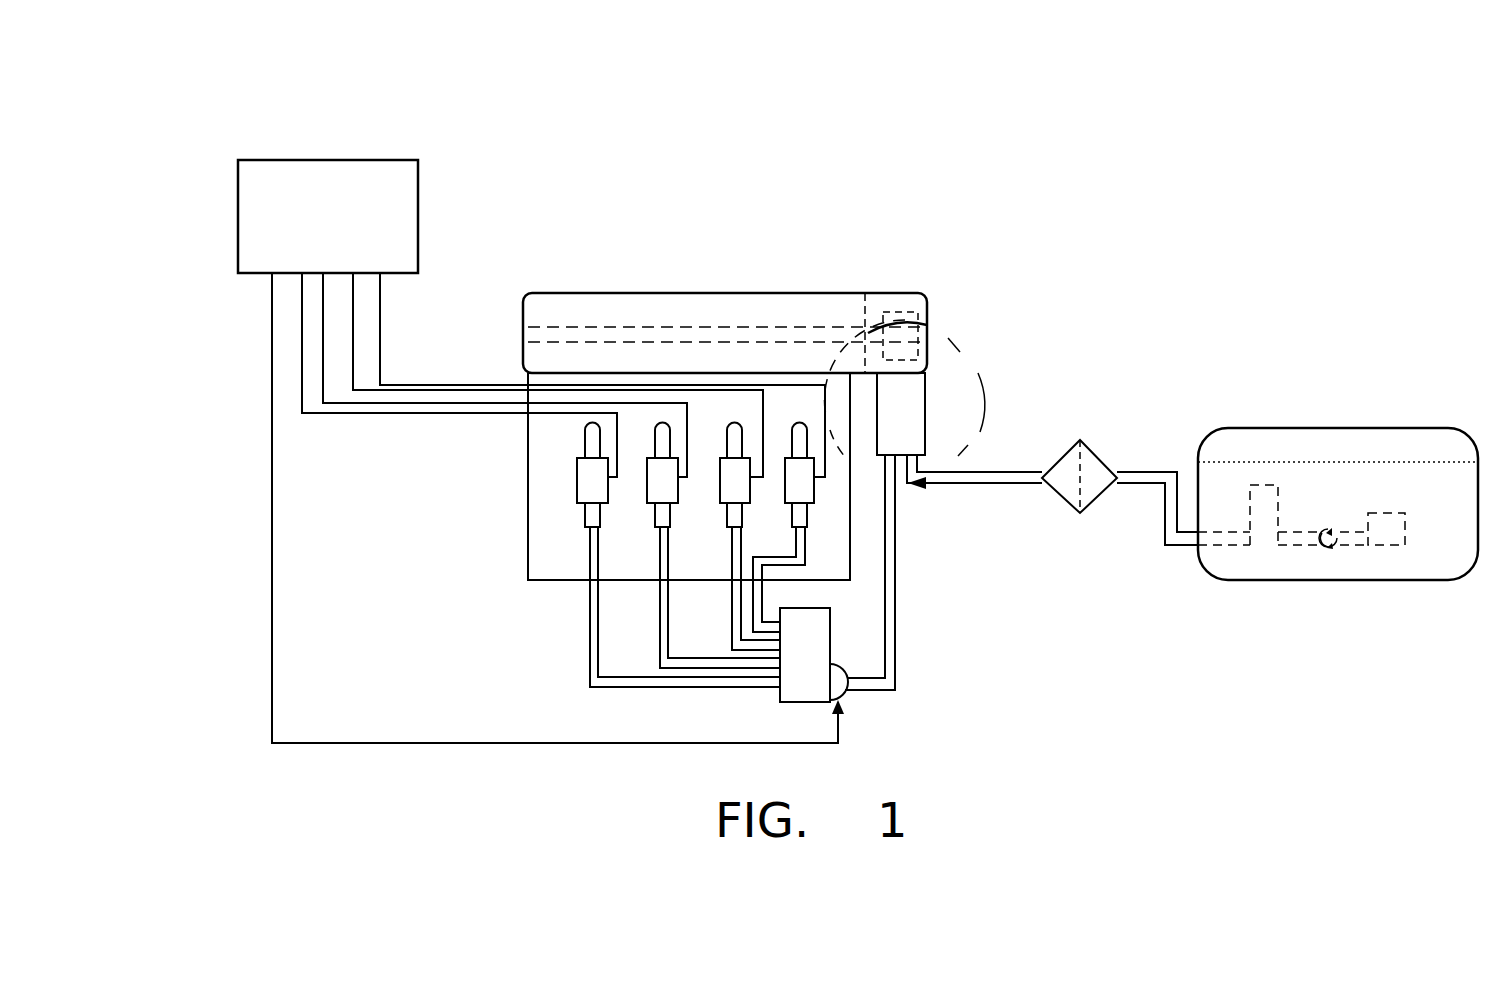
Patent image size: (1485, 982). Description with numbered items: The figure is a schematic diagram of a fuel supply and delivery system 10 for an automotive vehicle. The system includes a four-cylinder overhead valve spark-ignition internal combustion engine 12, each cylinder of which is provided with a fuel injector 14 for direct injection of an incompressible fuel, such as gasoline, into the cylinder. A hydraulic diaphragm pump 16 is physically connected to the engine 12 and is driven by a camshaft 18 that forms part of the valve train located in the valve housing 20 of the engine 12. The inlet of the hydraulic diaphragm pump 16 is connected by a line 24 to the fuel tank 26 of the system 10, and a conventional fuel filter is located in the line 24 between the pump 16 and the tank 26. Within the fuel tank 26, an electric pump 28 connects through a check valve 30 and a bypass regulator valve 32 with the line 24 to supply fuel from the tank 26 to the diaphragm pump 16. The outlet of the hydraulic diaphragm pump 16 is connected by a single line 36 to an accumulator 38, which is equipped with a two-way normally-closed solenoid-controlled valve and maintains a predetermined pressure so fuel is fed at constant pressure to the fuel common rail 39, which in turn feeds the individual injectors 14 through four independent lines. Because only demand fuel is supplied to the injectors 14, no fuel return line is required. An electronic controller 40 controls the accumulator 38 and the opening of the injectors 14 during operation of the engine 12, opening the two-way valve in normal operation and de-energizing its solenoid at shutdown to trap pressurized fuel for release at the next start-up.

The fuel supply and delivery system 10 is at (920, 232).
The internal combustion engine 12 is at (515, 312).
The fuel injector 14 is at (660, 490).
The hydraulic diaphragm pump 16 is at (932, 380).
The camshaft 18 is at (773, 332).
The valve housing 20 is at (641, 297).
The line 24 is at (983, 477).
The fuel tank 26 is at (1310, 427).
The electric pump 28 is at (1387, 533).
The check valve 30 is at (1330, 556).
The bypass regulator valve 32 is at (1260, 528).
The line 36 is at (895, 646).
The accumulator 38 is at (858, 696).
The fuel common rail 39 is at (795, 695).
The electronic controller 40 is at (243, 187).